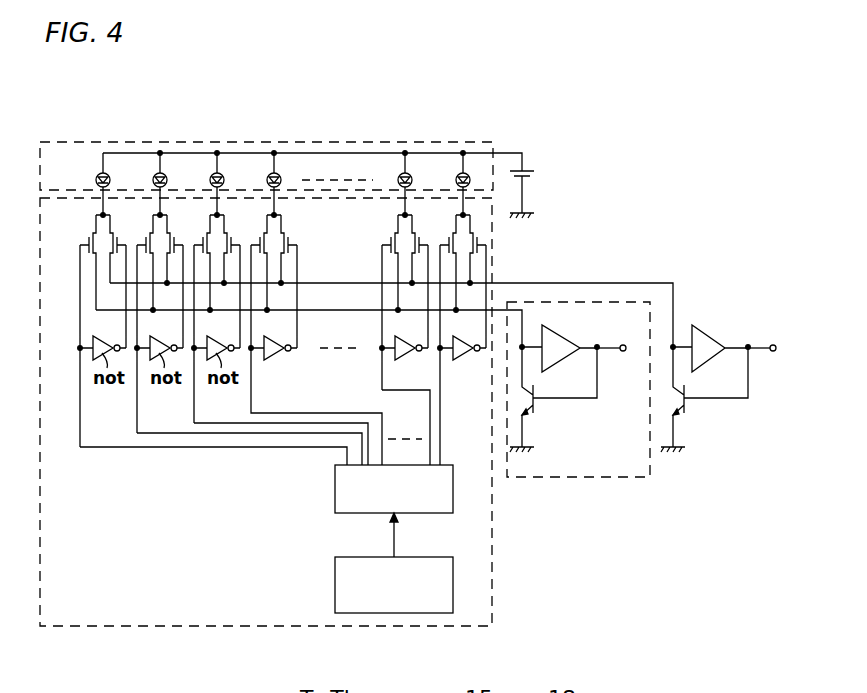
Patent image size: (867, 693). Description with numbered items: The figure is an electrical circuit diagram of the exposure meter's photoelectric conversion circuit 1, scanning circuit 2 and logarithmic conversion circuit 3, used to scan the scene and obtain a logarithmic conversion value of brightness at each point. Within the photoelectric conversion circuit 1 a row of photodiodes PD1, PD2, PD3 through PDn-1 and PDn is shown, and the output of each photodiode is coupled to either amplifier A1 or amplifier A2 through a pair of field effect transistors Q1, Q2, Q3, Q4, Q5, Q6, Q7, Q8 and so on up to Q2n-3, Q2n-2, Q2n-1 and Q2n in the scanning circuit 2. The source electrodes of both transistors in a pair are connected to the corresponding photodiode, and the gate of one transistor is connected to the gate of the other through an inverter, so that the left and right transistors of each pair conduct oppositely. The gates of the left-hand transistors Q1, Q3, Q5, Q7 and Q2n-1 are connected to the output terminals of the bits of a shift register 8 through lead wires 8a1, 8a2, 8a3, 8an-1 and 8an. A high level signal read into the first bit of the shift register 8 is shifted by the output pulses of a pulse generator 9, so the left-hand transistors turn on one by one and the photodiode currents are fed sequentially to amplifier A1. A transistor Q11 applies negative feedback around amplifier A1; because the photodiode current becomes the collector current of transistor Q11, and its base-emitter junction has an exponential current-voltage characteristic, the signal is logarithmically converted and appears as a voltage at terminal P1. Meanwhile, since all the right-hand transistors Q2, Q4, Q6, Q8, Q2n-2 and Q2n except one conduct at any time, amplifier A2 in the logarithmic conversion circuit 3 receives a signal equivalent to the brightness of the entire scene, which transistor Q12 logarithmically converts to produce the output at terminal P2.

The photoelectric conversion circuit 1 is at (488, 140).
The scanning circuit 2 is at (73, 628).
The logarithmic conversion circuit 3 is at (625, 478).
The shift register 8 is at (335, 497).
The pulse generator 9 is at (335, 578).
The lead wire 8a1 is at (320, 455).
The lead wire 8a2 is at (275, 445).
The lead wire 8a3 is at (259, 416).
The lead wire 8an-1 is at (430, 410).
The lead wire 8an is at (440, 420).
The photodiode PD1 is at (98, 172).
The photodiode PD2 is at (155, 172).
The photodiode PD3 is at (212, 172).
The photodiode PDn-1 is at (400, 173).
The photodiode PDn is at (460, 173).
The field effect transistor Q1 is at (89, 240).
The field effect transistor Q2 is at (118, 236).
The field effect transistor Q3 is at (146, 240).
The field effect transistor Q4 is at (175, 236).
The field effect transistor Q5 is at (203, 240).
The field effect transistor Q6 is at (232, 236).
The field effect transistor Q7 is at (260, 240).
The field effect transistor Q8 is at (288, 244).
The field effect transistor Q2n-3 is at (391, 241).
The field effect transistor Q2n-2 is at (418, 236).
The field effect transistor Q2n-1 is at (443, 236).
The field effect transistor Q2n is at (478, 242).
The amplifier A1 is at (555, 334).
The amplifier A2 is at (708, 333).
The terminal P1 is at (623, 352).
The terminal P2 is at (772, 343).
The transistor Q11 is at (524, 412).
The transistor Q12 is at (675, 412).